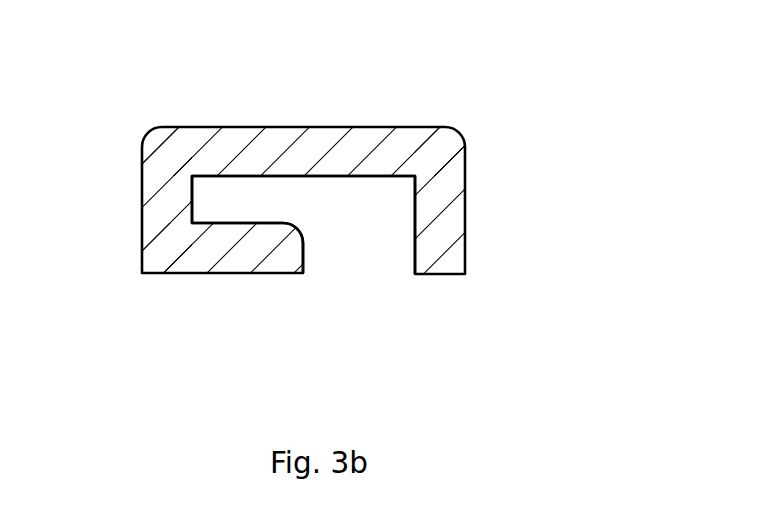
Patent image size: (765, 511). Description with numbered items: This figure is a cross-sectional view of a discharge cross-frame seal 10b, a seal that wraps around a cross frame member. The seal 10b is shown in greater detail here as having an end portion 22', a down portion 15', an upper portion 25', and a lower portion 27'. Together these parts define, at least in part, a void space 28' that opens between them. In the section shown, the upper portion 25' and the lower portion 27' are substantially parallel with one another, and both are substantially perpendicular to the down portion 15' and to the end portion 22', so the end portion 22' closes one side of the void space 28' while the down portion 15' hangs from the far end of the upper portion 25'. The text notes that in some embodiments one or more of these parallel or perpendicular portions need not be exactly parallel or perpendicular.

The discharge cross-frame seal 10b is at (524, 278).
The upper portion 25' is at (420, 255).
The end portion 22' is at (266, 190).
The lower portion 27' is at (333, 233).
The down portion 15' is at (420, 255).
The void space 28' is at (306, 257).